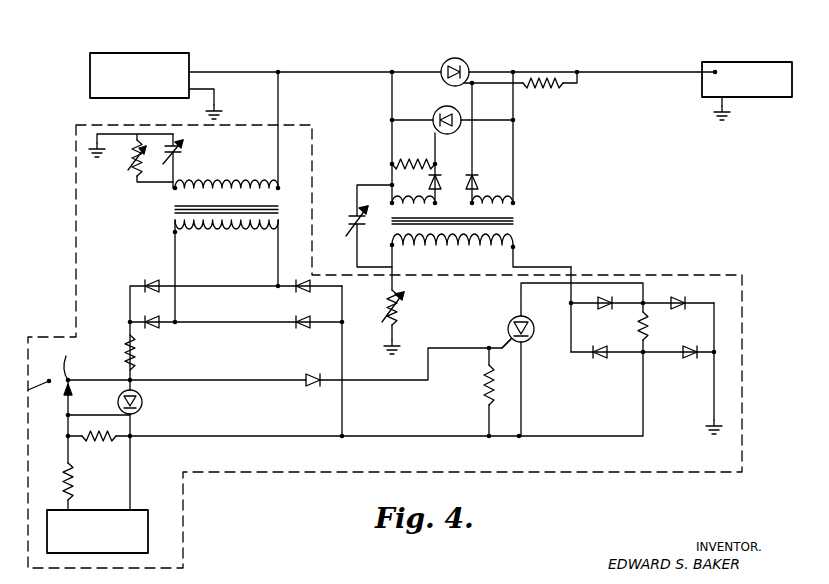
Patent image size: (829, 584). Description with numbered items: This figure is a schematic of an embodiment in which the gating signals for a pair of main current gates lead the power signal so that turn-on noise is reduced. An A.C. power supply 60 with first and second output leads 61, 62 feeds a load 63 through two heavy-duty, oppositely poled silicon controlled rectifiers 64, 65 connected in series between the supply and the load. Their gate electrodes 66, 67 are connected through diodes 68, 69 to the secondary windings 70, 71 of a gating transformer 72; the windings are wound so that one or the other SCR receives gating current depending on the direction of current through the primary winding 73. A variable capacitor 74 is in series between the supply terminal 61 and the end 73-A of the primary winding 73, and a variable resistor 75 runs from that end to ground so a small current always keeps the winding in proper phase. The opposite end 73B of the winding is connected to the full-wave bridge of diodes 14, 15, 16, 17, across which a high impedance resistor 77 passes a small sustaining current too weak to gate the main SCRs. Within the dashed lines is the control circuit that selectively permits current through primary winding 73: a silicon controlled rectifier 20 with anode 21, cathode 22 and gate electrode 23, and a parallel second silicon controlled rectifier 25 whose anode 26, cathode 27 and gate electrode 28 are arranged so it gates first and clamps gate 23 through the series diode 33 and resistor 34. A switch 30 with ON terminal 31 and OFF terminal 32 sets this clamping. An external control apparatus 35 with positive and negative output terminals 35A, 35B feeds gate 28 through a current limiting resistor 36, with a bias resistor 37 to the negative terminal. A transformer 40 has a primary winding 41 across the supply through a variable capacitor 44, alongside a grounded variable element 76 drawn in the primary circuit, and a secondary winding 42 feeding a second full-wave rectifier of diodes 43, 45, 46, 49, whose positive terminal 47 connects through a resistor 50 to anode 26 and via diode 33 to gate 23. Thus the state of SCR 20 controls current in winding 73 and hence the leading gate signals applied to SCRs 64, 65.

The diode 14 is at (605, 309).
The diode 15 is at (600, 359).
The diode 16 is at (682, 297).
The diode 17 is at (690, 359).
The silicon controlled rectifier 20 is at (556, 359).
The anode 21 is at (523, 320).
The cathode 22 is at (521, 354).
The gate electrode 23 is at (505, 344).
The silicon controlled rectifier 25 is at (143, 402).
The anode 26 is at (140, 381).
The cathode 27 is at (140, 433).
The gate electrode 28 is at (107, 415).
The switch 30 is at (66, 415).
The ON terminal 31 is at (30, 389).
The OFF terminal 32 is at (70, 364).
The diode 33 is at (311, 372).
The resistor 34 is at (485, 388).
The external control apparatus 35 is at (99, 530).
The positive output terminal 35A is at (66, 503).
The negative output terminal 35B is at (132, 507).
The current limiting resistor 36 is at (73, 481).
The bias resistor 37 is at (97, 441).
The transformer 40 is at (206, 198).
The primary winding 41 is at (236, 184).
The secondary winding 42 is at (230, 229).
The diode 43 is at (152, 280).
The variable capacitor 44 is at (188, 154).
The diode 45 is at (156, 326).
The diode 46 is at (307, 318).
The positive terminal 47 is at (129, 289).
The diode 49 is at (296, 292).
The resistor 50 is at (135, 358).
The A.C. power supply 60 is at (163, 53).
The first output lead 61 is at (210, 72).
The second output lead 62 is at (217, 100).
The load 63 is at (718, 62).
The heavy-duty silicon controlled rectifier 64 is at (466, 62).
The heavy-duty silicon controlled rectifier 65 is at (440, 111).
The gate electrode 66 is at (474, 98).
The gate electrode 67 is at (437, 149).
The diode 68 is at (479, 182).
The diode 69 is at (428, 182).
The secondary winding 70 is at (517, 221).
The secondary winding 71 is at (388, 201).
The gating transformer 72 is at (476, 227).
The primary winding 73 is at (455, 246).
The end of primary winding 73-A is at (398, 246).
The end of primary winding 73B is at (516, 250).
The variable capacitor 74 is at (352, 214).
The variable resistor 75 is at (402, 312).
The variable resistor 76 is at (125, 164).
The high impedance resistor 77 is at (649, 331).